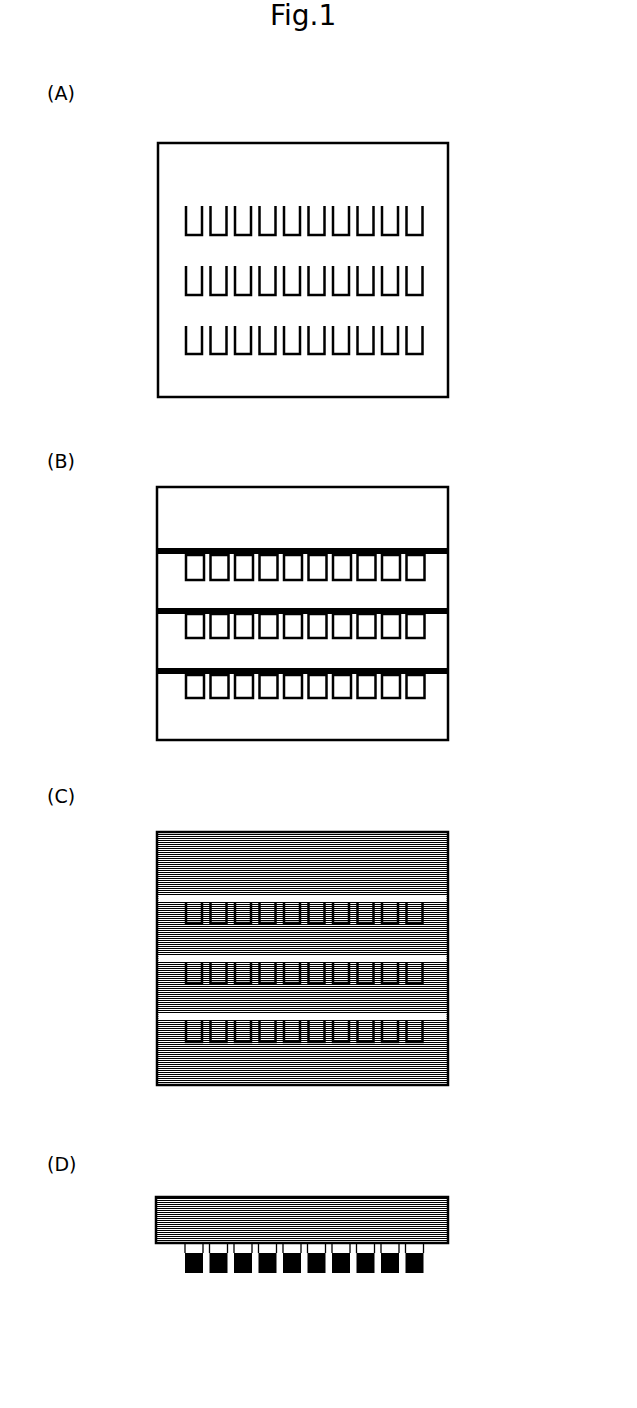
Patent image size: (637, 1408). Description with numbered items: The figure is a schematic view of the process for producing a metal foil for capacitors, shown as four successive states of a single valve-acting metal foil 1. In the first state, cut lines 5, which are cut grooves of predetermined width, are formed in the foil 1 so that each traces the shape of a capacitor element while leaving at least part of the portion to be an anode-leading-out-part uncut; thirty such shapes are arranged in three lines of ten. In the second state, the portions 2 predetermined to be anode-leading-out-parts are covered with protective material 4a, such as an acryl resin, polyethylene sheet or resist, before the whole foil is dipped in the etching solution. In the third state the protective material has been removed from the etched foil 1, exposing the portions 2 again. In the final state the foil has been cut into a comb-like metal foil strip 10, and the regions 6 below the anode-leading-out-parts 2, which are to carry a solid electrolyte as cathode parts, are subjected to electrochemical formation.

The valve-acting metal foil 1 is at (387, 152).
The portions predetermined to be anode-leading-out-parts 2 is at (291, 898).
The protective material 4a is at (278, 548).
The cut lines 5 is at (197, 237).
The regions predetermined to have a solid electrolyte formed thereon 6 is at (197, 1273).
The comb-like metal foil strips 10 is at (430, 1222).